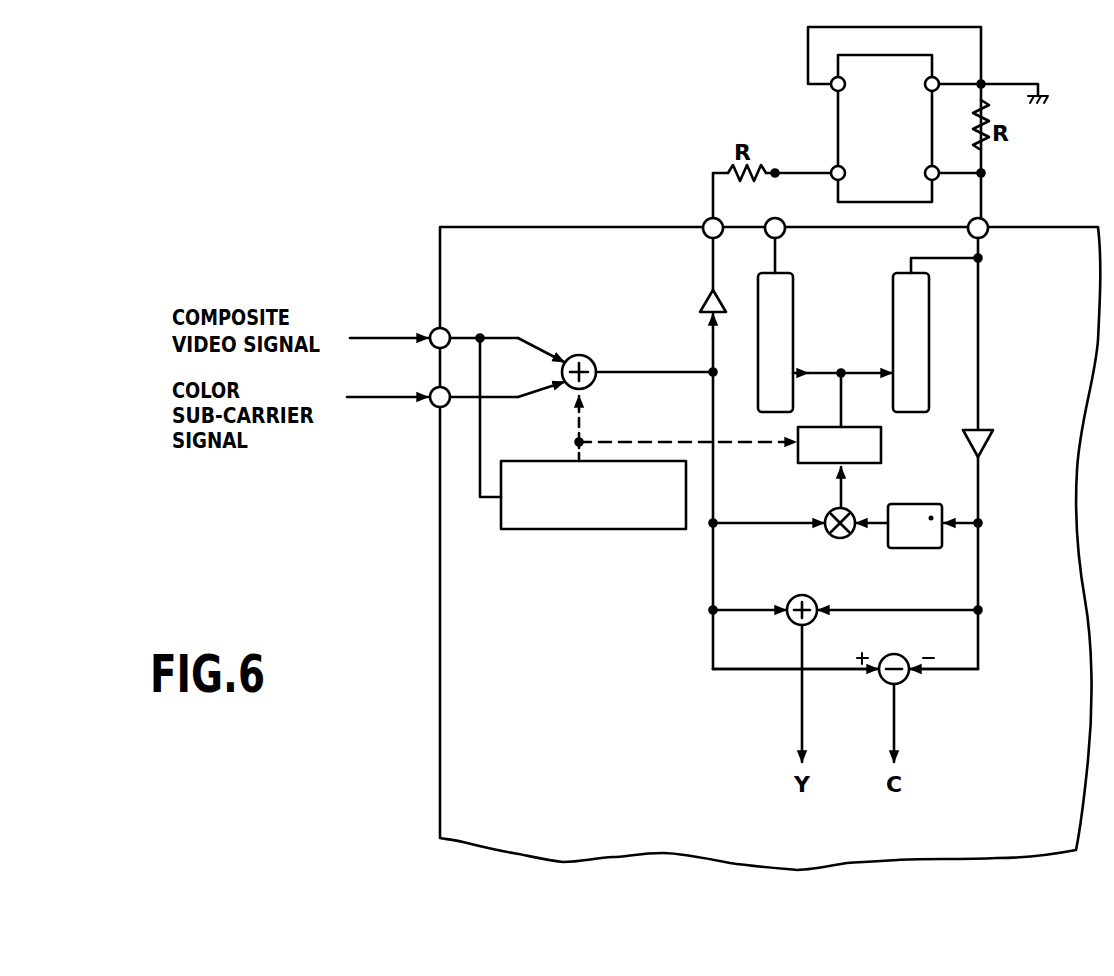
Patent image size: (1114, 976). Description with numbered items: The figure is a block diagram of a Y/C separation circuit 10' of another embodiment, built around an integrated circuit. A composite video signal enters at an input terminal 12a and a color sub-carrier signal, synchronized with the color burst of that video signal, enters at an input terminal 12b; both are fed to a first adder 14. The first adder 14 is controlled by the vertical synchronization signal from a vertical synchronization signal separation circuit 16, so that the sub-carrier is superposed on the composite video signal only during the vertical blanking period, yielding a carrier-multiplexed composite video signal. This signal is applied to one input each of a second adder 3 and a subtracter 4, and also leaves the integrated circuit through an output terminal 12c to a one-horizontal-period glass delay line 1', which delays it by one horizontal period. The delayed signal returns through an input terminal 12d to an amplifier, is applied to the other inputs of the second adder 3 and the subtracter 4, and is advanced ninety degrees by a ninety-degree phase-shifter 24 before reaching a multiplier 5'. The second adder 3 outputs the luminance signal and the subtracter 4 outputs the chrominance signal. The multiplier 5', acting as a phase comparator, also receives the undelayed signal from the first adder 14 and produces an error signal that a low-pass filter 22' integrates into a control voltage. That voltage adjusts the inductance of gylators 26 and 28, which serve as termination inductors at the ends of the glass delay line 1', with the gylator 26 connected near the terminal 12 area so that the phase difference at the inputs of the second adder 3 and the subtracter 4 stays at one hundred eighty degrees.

The 1H glass delay line 1' is at (860, 128).
The Y/C separation circuit 10' is at (770, 511).
The terminal 12 is at (784, 235).
The input terminal 12a is at (447, 331).
The input terminal 12b is at (434, 405).
The output terminal 12c is at (706, 220).
The input terminal 12d is at (988, 222).
The first adder 14 is at (597, 380).
The vertical synchronization signal separation circuit 16 is at (585, 530).
The low-pass filter 22' is at (805, 455).
The 90° phase-shifter 24 is at (899, 504).
The gylator 26 is at (794, 324).
The gylator 28 is at (930, 330).
The second adder 3 is at (795, 624).
The subtracter 4 is at (906, 680).
The multiplier 5' is at (818, 509).